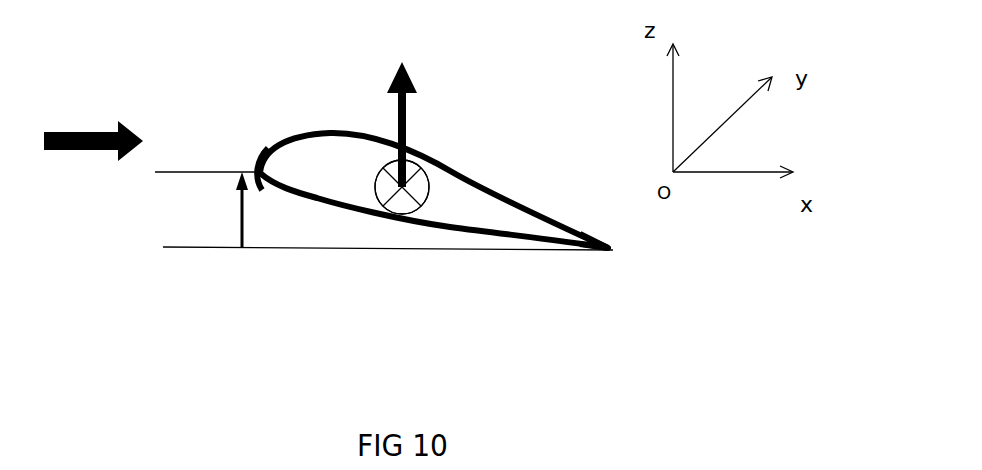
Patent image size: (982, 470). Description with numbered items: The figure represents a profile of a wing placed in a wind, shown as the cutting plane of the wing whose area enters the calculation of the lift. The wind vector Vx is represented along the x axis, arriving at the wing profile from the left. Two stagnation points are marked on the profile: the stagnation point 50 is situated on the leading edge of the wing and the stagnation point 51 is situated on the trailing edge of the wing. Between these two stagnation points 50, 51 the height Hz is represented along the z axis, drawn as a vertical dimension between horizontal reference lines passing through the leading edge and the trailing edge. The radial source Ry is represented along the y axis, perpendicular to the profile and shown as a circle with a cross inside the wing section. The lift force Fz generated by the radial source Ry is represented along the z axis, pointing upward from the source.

The stagnation point 50 is at (256, 173).
The stagnation point 51 is at (610, 252).
The lift force Fz is at (426, 12).
The wind vector Vx is at (107, 82).
The height Hz is at (228, 193).
The radial source Ry is at (427, 197).